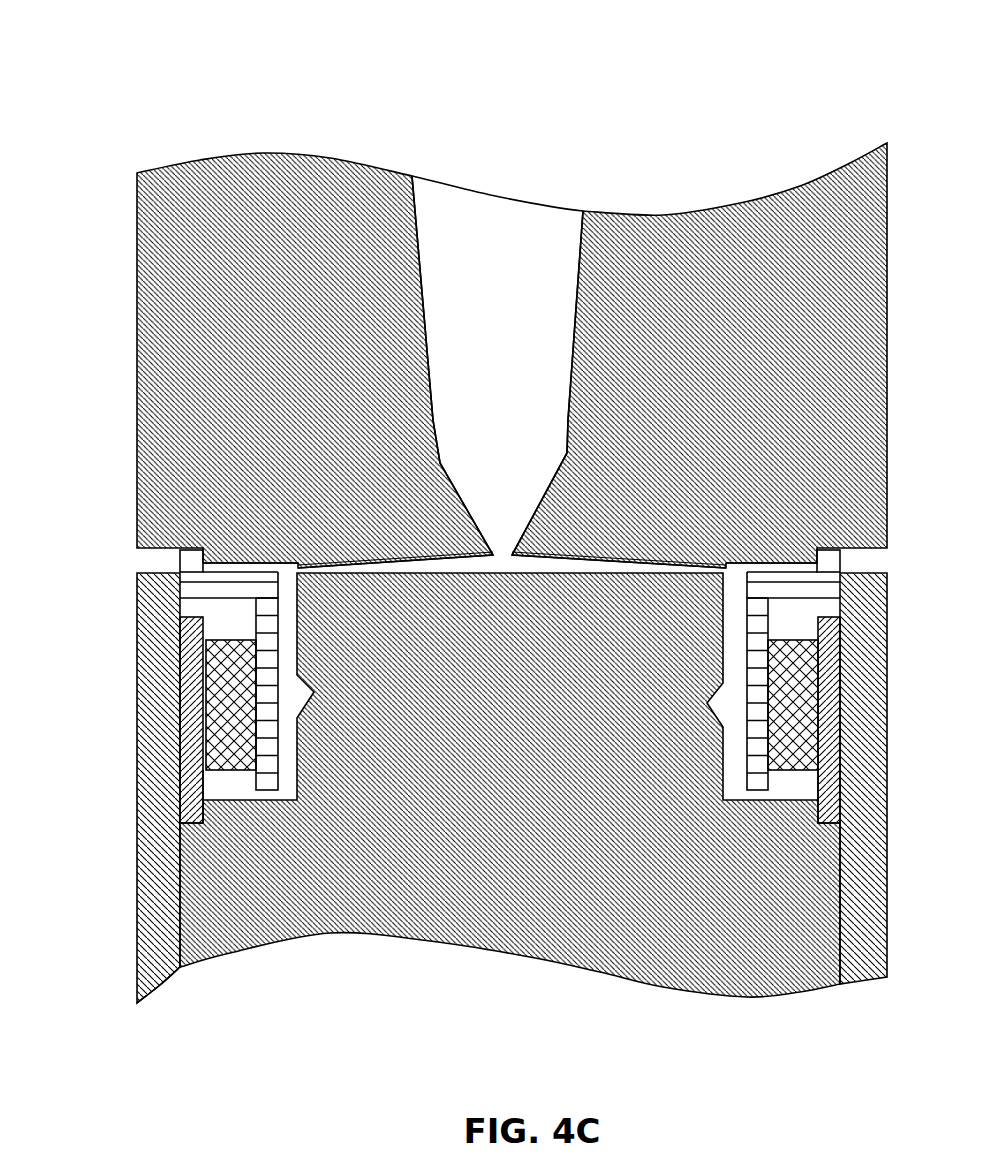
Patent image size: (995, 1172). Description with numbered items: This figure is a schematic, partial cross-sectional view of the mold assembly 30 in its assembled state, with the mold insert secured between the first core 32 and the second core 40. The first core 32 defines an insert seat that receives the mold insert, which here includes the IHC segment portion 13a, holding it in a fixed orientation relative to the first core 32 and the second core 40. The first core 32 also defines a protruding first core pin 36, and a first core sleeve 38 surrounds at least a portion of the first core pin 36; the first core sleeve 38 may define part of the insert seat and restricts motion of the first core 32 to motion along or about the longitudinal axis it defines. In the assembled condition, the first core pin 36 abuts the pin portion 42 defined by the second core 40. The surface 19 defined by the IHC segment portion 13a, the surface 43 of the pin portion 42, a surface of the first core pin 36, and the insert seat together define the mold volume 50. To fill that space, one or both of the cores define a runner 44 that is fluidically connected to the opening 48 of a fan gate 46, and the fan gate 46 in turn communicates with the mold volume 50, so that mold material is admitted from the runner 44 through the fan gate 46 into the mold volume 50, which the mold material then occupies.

The mold assembly 30 is at (101, 72).
The second core 40 is at (137, 195).
The runner 44 is at (473, 227).
The fan gate 46 is at (437, 567).
The opening 48 is at (297, 574).
The mold volume 50 is at (237, 566).
The pin portion 42 is at (182, 563).
The surface of pin portion 43 is at (262, 565).
The first core pin 36 is at (330, 625).
The first core sleeve 38 is at (163, 950).
The first core 32 is at (137, 877).
The IHC segment portion 13a is at (186, 797).
The surface 19 is at (277, 720).